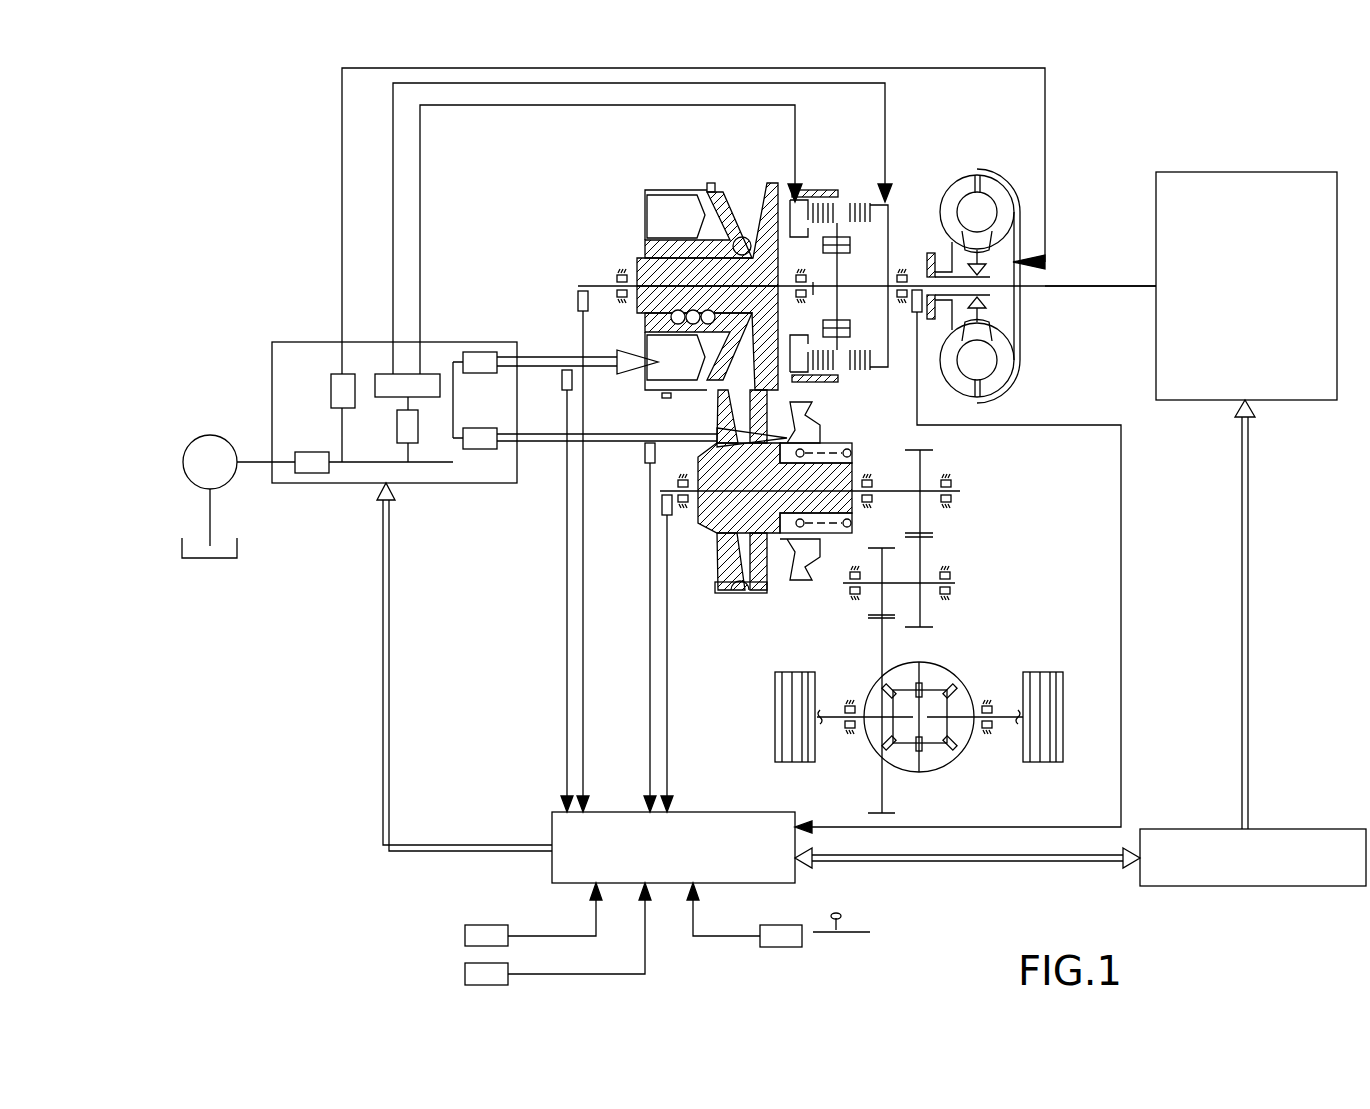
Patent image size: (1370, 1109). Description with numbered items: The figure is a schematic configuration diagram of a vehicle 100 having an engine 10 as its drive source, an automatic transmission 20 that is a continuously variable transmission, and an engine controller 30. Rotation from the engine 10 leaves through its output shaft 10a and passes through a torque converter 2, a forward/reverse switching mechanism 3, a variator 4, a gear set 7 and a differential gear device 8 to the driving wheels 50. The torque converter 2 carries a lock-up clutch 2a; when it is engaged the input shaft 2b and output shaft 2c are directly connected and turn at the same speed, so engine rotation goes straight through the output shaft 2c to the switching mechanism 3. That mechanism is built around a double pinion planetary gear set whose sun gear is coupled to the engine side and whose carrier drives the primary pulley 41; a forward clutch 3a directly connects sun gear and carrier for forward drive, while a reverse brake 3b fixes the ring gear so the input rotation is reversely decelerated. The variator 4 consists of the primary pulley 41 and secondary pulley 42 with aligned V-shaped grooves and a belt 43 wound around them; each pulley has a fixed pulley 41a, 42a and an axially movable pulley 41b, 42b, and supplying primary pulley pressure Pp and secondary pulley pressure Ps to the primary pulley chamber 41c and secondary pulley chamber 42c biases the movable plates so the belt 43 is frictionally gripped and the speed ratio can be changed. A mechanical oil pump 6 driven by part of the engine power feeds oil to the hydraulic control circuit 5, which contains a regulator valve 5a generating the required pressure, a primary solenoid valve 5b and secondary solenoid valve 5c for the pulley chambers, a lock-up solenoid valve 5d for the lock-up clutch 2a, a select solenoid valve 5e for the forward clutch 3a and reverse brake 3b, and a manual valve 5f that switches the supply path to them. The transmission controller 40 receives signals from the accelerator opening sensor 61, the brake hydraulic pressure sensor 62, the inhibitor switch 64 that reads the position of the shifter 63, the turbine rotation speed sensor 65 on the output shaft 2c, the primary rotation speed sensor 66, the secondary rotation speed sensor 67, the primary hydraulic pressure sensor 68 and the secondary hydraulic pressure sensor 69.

The vehicle 100 is at (205, 842).
The engine 10 is at (1251, 172).
The output shaft of the engine 10a is at (1141, 290).
The automatic transmission 20 is at (1075, 157).
The torque converter 2 is at (948, 162).
The lock-up clutch 2a is at (1013, 320).
The input shaft of the torque converter 2b is at (1040, 286).
The output shaft of the torque converter 2c is at (922, 287).
The forward/reverse switching mechanism 3 is at (808, 185).
The forward clutch 3a is at (854, 200).
The reverse brake 3b is at (832, 191).
The variator 4 is at (600, 180).
The primary pulley 41 is at (645, 178).
The fixed pulley 41a is at (769, 182).
The movable pulley 41b is at (714, 186).
The primary pulley chamber 41c is at (660, 218).
The belt 43 is at (742, 235).
The secondary pulley 42 is at (808, 597).
The fixed pulley 42a is at (715, 552).
The movable pulley 42b is at (758, 597).
The secondary pulley chamber 42c is at (781, 584).
The hydraulic control circuit 5 is at (272, 350).
The regulator valve 5a is at (320, 474).
The primary solenoid valve 5b is at (481, 352).
The secondary solenoid valve 5c is at (482, 450).
The lock-up solenoid valve 5d is at (338, 372).
The select solenoid valve 5e is at (397, 441).
The manual valve 5f is at (386, 372).
The oil pump 6 is at (194, 443).
The gear set 7 is at (980, 520).
The differential gear device 8 is at (978, 658).
The driving wheels 50 is at (770, 740).
The engine controller 30 is at (1283, 829).
The transmission controller 40 is at (552, 837).
The accelerator opening sensor 61 is at (465, 933).
The brake hydraulic pressure sensor 62 is at (465, 978).
The shifter 63 is at (860, 917).
The inhibitor switch 64 is at (800, 950).
The turbine rotation speed sensor 65 is at (913, 318).
The primary rotation speed sensor 66 is at (589, 300).
The secondary rotation speed sensor 67 is at (672, 512).
The primary hydraulic pressure sensor 68 is at (562, 388).
The secondary hydraulic pressure sensor 69 is at (646, 462).